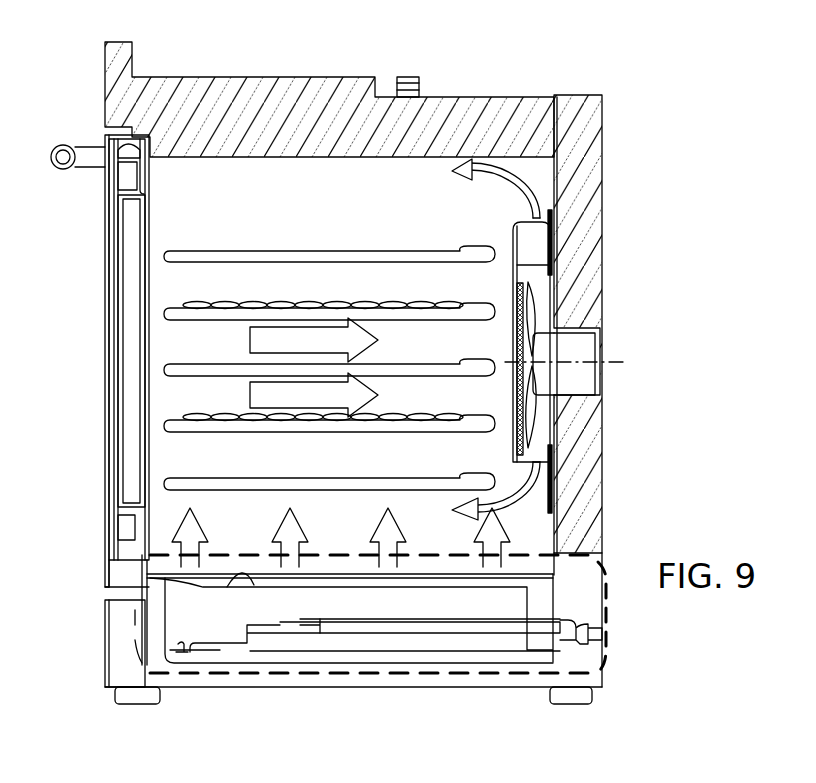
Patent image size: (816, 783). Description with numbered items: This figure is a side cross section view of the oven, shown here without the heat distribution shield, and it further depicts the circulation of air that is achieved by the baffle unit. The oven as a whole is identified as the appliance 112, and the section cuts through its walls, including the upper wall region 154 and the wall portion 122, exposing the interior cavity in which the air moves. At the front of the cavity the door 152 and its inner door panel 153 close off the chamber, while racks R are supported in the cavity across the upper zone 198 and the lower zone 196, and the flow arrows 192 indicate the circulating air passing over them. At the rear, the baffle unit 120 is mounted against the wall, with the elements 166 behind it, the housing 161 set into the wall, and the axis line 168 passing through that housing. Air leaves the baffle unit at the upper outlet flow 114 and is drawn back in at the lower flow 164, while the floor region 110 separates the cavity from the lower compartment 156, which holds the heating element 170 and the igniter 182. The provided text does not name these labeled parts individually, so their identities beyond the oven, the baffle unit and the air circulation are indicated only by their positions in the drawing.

The cooking appliance 112 is at (488, 74).
The rear wall 154 is at (564, 186).
The cavity wall 122 is at (556, 280).
The door 152 is at (185, 212).
The door panel 153 is at (128, 372).
The upper cooking zone 198 is at (324, 226).
The lower cooking zone 196 is at (223, 402).
The rack R is at (232, 304).
The air flow arrows 192 is at (302, 350).
The baffle 120 is at (504, 282).
The fan blade 166 is at (531, 320).
The fan motor housing 161 is at (579, 344).
The motor axis 168 is at (613, 364).
The upper air outlet flow 114 is at (508, 238).
The lower air inlet flow 164 is at (562, 503).
The cooking chamber floor 110 is at (523, 507).
The lower compartment 156 is at (146, 563).
The heating element 170 is at (362, 648).
The igniter 182 is at (243, 572).